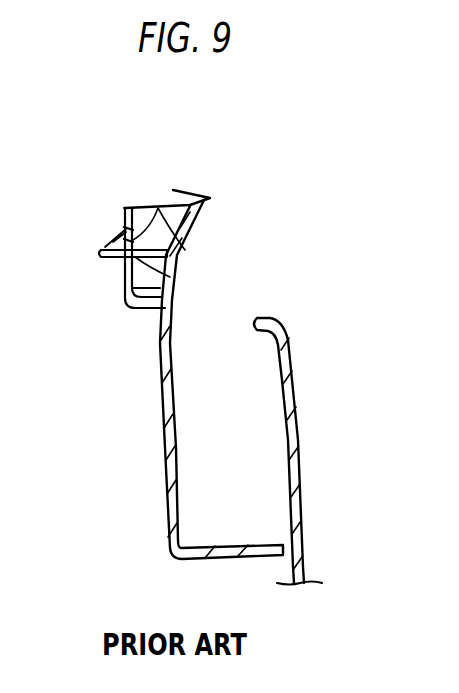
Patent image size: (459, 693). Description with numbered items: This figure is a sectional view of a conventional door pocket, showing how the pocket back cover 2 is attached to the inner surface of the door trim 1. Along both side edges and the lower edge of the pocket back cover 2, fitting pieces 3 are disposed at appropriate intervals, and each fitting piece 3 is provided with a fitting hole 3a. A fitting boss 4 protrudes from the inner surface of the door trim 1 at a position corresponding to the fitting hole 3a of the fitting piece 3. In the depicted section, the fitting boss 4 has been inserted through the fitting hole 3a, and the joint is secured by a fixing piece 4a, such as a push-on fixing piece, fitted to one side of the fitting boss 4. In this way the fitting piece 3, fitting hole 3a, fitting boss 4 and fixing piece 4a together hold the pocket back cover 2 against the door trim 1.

The door trim 1 is at (300, 438).
The pocket back cover 2 is at (163, 450).
The fitting piece 3 is at (125, 207).
The fitting hole 3a is at (158, 208).
The fitting boss 4 is at (170, 277).
The fixing piece 4a is at (120, 258).